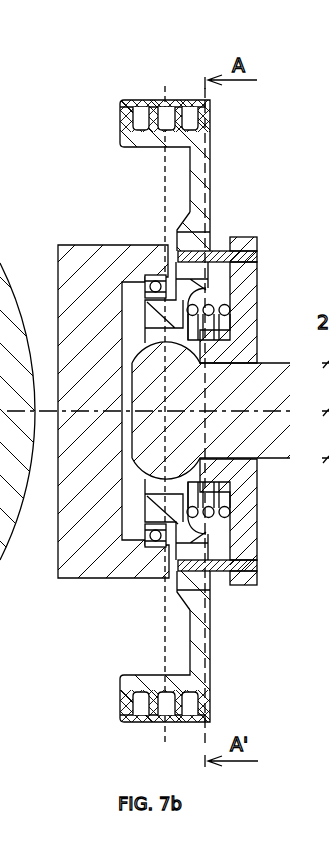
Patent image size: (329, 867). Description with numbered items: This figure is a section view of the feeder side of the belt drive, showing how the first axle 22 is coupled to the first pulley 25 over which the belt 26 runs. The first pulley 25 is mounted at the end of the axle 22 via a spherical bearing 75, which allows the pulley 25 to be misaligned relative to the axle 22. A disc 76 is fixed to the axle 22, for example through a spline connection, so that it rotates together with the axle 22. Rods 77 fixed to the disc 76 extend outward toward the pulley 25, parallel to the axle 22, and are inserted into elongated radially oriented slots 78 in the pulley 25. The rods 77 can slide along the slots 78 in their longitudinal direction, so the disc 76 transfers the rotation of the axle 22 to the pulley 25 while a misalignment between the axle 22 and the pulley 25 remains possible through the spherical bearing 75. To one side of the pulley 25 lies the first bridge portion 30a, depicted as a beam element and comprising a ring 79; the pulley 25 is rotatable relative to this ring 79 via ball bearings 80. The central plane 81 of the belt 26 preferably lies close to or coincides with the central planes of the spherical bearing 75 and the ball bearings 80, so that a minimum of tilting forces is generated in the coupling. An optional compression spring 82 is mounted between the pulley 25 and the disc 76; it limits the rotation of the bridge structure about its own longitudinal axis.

The first axle 22 is at (250, 366).
The first pulley 25 is at (195, 160).
The belt 26 is at (132, 103).
The first bridge portion 30a is at (75, 257).
The spherical bearing 75 is at (166, 353).
The disc 76 is at (245, 247).
The rods 77 is at (217, 248).
The radially oriented slots 78 is at (187, 240).
The ring 79 is at (145, 258).
The ball bearings 80 is at (122, 578).
The central plane of the belt 81 is at (163, 87).
The compression spring 82 is at (213, 497).